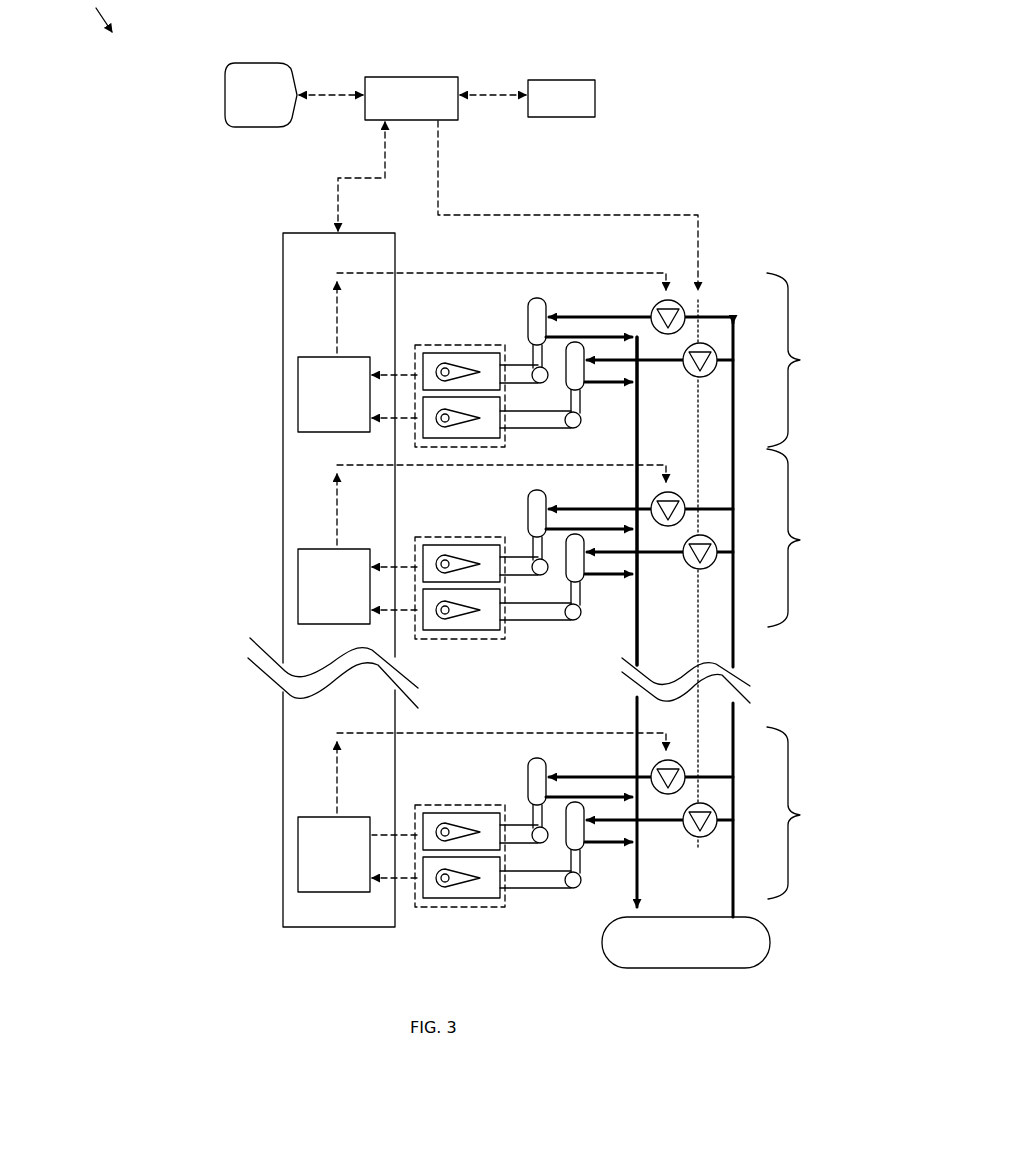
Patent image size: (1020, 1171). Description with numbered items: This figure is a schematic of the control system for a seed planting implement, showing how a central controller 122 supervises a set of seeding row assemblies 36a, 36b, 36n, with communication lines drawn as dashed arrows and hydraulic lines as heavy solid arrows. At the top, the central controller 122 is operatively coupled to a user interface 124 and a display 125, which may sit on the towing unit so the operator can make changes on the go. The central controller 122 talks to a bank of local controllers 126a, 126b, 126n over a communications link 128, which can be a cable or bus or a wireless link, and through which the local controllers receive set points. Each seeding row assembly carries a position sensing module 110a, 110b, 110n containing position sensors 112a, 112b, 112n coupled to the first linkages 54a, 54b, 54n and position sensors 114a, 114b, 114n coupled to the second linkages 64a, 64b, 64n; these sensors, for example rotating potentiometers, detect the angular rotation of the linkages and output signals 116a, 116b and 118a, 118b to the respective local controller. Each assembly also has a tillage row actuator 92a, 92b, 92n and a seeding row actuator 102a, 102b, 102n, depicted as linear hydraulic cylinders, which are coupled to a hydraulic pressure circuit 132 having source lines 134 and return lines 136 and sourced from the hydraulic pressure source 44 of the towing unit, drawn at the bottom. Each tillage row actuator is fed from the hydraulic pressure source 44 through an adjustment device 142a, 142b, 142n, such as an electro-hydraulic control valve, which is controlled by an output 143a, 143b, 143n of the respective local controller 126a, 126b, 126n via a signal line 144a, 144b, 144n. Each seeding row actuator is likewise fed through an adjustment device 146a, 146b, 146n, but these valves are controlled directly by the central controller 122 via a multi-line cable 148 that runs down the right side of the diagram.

The display 125 is at (268, 64).
The central controller 122 is at (432, 110).
The user interface 124 is at (584, 81).
The communications link 128 is at (338, 180).
The multi-line cable 148 is at (628, 213).
The hydraulic pressure circuit 132 is at (742, 653).
The source line 134 is at (738, 712).
The return line 136 is at (632, 712).
The hydraulic pressure source 44 is at (698, 957).
The signal line 144a is at (510, 272).
The signal line 144b is at (501, 479).
The signal line 144n is at (501, 747).
The output 143a is at (338, 310).
The output 143b is at (363, 509).
The output 143n is at (363, 777).
The local controller 126a is at (360, 404).
The local controller 126b is at (334, 586).
The local controller 126n is at (334, 854).
The signal 116a is at (401, 372).
The signal 116b is at (379, 548).
The signal 118a is at (388, 422).
The signal 118b is at (374, 628).
The position sensing module 110a is at (422, 343).
The position sensing module 110b is at (477, 606).
The position sensing module 110n is at (464, 882).
The position sensor 112a is at (458, 352).
The position sensor 112b is at (467, 542).
The position sensor 112n is at (466, 810).
The position sensor 114a is at (506, 449).
The position sensor 114b is at (461, 640).
The position sensor 114n is at (490, 899).
The tillage row actuator 92a is at (546, 303).
The tillage row actuator 92b is at (558, 518).
The tillage row actuator 92n is at (558, 786).
The seeding row actuator 102a is at (584, 392).
The seeding row actuator 102b is at (598, 570).
The seeding row actuator 102n is at (600, 838).
The first linkage 54a is at (539, 385).
The first linkage 54b is at (539, 577).
The first linkage 54n is at (539, 845).
The second linkage 64a is at (581, 427).
The second linkage 64b is at (570, 624).
The second linkage 64n is at (557, 894).
The adjustment device 142a is at (676, 290).
The adjustment device 142b is at (666, 483).
The adjustment device 142n is at (673, 753).
The adjustment device 146a is at (689, 374).
The adjustment device 146b is at (682, 572).
The adjustment device 146n is at (682, 835).
The seeding row assembly 36a is at (807, 360).
The seeding row assembly 36b is at (808, 538).
The seeding row assembly 36n is at (812, 813).